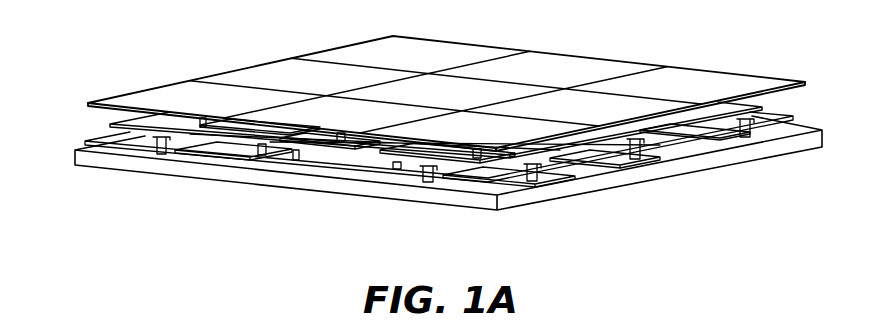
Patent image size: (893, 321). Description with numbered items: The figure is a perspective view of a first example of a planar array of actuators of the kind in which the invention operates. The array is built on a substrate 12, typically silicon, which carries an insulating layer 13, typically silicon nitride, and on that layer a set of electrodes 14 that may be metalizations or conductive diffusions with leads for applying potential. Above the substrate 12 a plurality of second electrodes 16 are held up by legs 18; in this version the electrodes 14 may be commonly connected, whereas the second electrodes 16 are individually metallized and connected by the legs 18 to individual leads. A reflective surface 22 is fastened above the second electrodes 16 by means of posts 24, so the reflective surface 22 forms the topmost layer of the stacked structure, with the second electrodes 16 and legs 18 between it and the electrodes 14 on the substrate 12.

The substrate 12 is at (512, 200).
The insulating layer 13 is at (200, 152).
The electrodes 14 is at (607, 158).
The second electrodes 16 is at (112, 127).
The legs 18 is at (96, 143).
The reflective surface 22 is at (267, 78).
The posts 24 is at (282, 147).